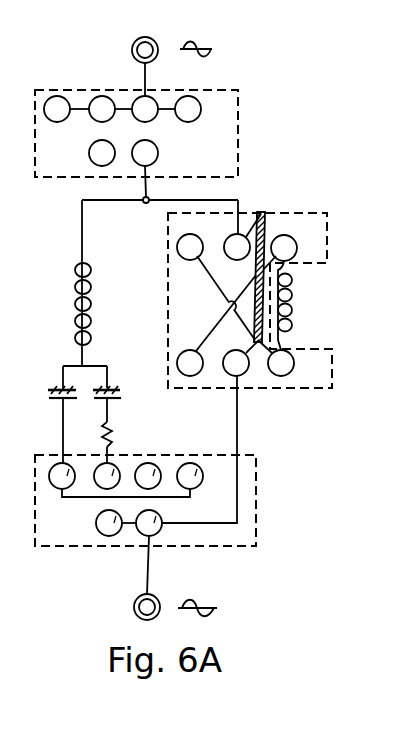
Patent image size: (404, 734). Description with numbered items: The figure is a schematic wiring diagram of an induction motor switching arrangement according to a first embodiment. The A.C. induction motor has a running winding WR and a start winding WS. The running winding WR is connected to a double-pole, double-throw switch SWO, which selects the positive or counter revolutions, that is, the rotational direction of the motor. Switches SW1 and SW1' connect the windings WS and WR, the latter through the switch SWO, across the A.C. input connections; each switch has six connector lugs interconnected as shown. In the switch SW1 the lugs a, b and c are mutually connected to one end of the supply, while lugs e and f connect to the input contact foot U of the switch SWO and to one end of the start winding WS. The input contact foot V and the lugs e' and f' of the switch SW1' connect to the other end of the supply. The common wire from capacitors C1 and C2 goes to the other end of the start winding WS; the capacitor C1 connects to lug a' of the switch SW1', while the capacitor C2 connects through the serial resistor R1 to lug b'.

The switch SW1 is at (179, 133).
The switch SW1' is at (176, 500).
The double-pole, double-throw switch SWO is at (275, 292).
The start winding WS is at (59, 312).
The running winding WR is at (305, 305).
The capacitor C1 is at (49, 414).
The capacitor C2 is at (122, 394).
The resistor R1 is at (116, 442).